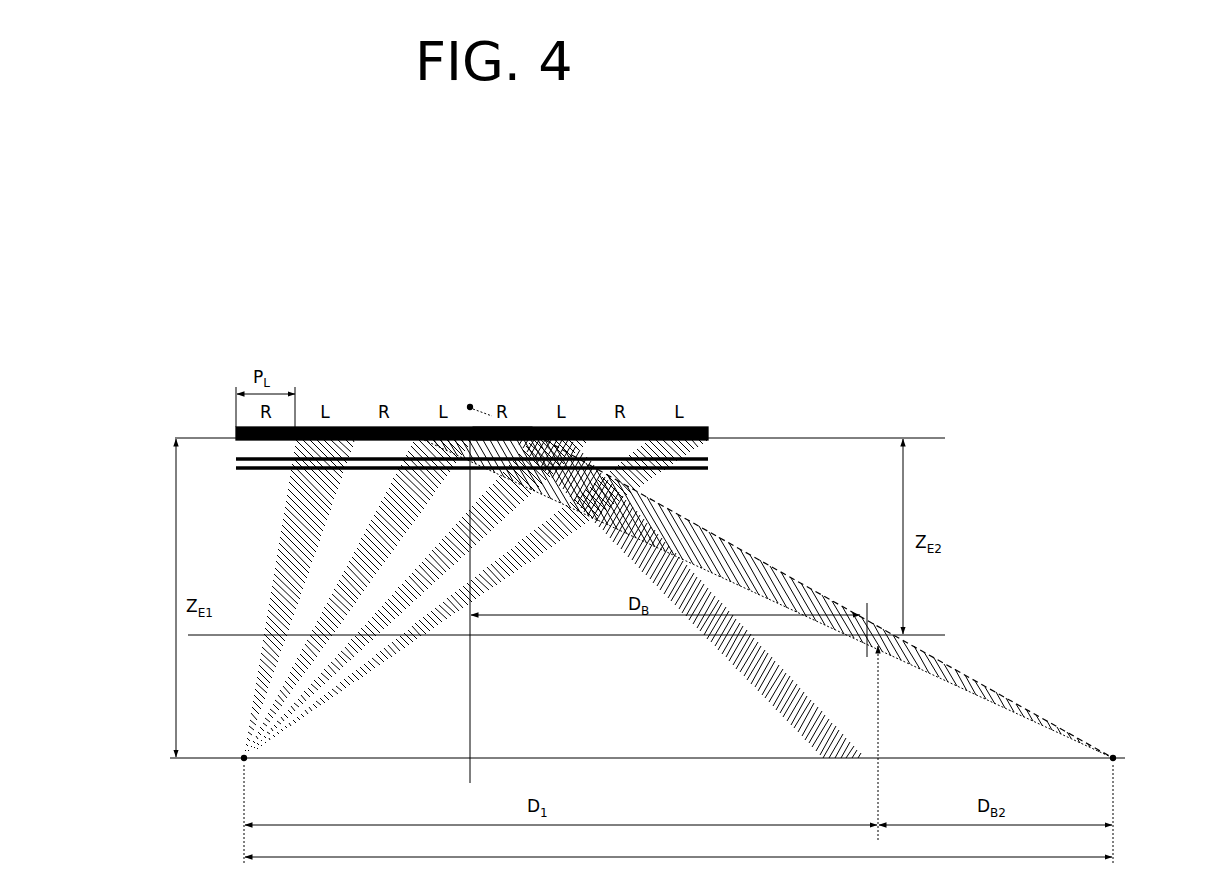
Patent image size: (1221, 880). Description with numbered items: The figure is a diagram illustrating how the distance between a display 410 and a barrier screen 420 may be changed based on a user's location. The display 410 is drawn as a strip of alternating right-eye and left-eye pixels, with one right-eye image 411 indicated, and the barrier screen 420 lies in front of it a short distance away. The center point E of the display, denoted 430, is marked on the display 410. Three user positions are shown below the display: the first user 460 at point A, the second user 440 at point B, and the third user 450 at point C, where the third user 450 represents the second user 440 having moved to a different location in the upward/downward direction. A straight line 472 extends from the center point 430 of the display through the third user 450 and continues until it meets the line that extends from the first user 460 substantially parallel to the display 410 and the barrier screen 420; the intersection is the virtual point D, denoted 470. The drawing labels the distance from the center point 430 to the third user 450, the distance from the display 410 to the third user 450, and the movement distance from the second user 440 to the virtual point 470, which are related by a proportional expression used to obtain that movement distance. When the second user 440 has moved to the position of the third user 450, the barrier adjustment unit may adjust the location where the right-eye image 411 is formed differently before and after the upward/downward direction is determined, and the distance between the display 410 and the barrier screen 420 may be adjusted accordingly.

The display 410 is at (714, 421).
The right-eye image 411 is at (497, 402).
The barrier screen 420 is at (720, 462).
The center point E of the display 430 is at (468, 403).
The second user 440 is at (866, 788).
The third user 450 is at (856, 670).
The first user 460 is at (235, 787).
The virtual point D 470 is at (1125, 780).
The straight line 472 is at (730, 540).